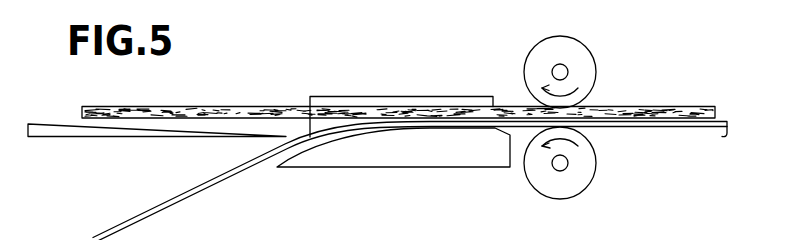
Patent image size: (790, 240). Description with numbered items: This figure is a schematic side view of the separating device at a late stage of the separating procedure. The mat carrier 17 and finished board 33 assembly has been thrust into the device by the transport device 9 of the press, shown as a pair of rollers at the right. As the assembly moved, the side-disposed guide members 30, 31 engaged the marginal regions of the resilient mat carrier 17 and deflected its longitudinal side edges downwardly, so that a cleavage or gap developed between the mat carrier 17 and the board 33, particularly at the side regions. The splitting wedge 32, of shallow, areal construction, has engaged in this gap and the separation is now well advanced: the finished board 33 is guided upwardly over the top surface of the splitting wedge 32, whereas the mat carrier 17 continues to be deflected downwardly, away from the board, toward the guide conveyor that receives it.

The transport device 9 is at (587, 67).
The mat carrier 17 is at (183, 195).
The guide member 30 is at (405, 102).
The guide member 31 is at (460, 157).
The splitting wedge 32 is at (83, 131).
The finished board 33 is at (254, 105).